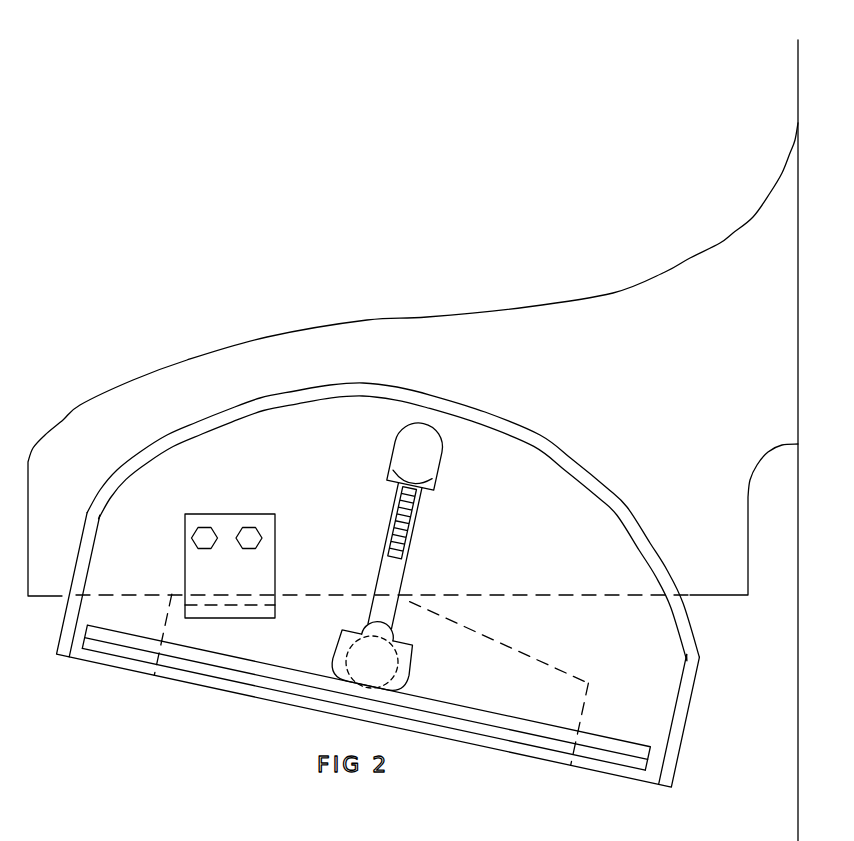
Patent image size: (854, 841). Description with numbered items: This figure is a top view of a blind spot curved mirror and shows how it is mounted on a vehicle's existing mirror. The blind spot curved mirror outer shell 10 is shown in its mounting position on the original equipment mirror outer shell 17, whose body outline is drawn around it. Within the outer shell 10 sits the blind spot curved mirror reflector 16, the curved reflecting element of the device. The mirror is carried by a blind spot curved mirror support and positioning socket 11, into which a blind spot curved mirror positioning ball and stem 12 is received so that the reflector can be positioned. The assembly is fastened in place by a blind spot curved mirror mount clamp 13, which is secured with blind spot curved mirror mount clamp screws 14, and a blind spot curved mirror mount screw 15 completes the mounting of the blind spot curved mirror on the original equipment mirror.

The blind spot curved mirror outer shell 10 is at (625, 503).
The blind spot curved mirror support and positioning socket 11 is at (444, 702).
The blind spot curved mirror positioning ball and stem 12 is at (408, 552).
The blind spot curved mirror mount clamp 13 is at (218, 513).
The blind spot curved mirror mount clamp screws 14 is at (249, 527).
The blind spot curved mirror mount screw 15 is at (391, 462).
The blind spot curved mirror reflector 16 is at (494, 738).
The original equipment mirror outer shell 17 is at (372, 320).